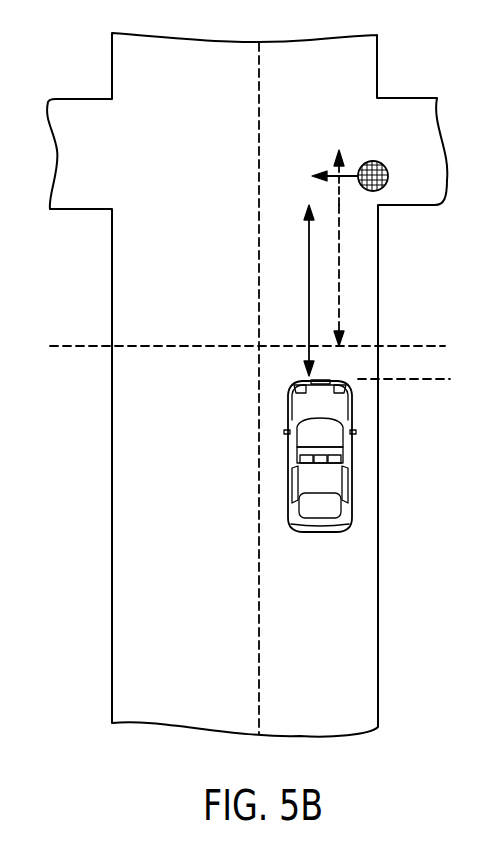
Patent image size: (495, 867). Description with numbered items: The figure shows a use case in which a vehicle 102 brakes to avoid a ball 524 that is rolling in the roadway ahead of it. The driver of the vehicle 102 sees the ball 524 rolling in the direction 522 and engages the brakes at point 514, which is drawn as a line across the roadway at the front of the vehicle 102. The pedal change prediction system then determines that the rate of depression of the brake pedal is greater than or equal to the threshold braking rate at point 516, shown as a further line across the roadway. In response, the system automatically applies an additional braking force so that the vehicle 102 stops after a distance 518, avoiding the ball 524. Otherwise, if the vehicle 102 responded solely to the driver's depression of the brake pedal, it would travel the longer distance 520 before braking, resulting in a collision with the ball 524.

The vehicle 102 is at (352, 448).
The point 514 is at (434, 381).
The point 516 is at (428, 343).
The distance 518 is at (309, 279).
The distance 520 is at (340, 260).
The direction 522 is at (340, 172).
The ball 524 is at (388, 176).